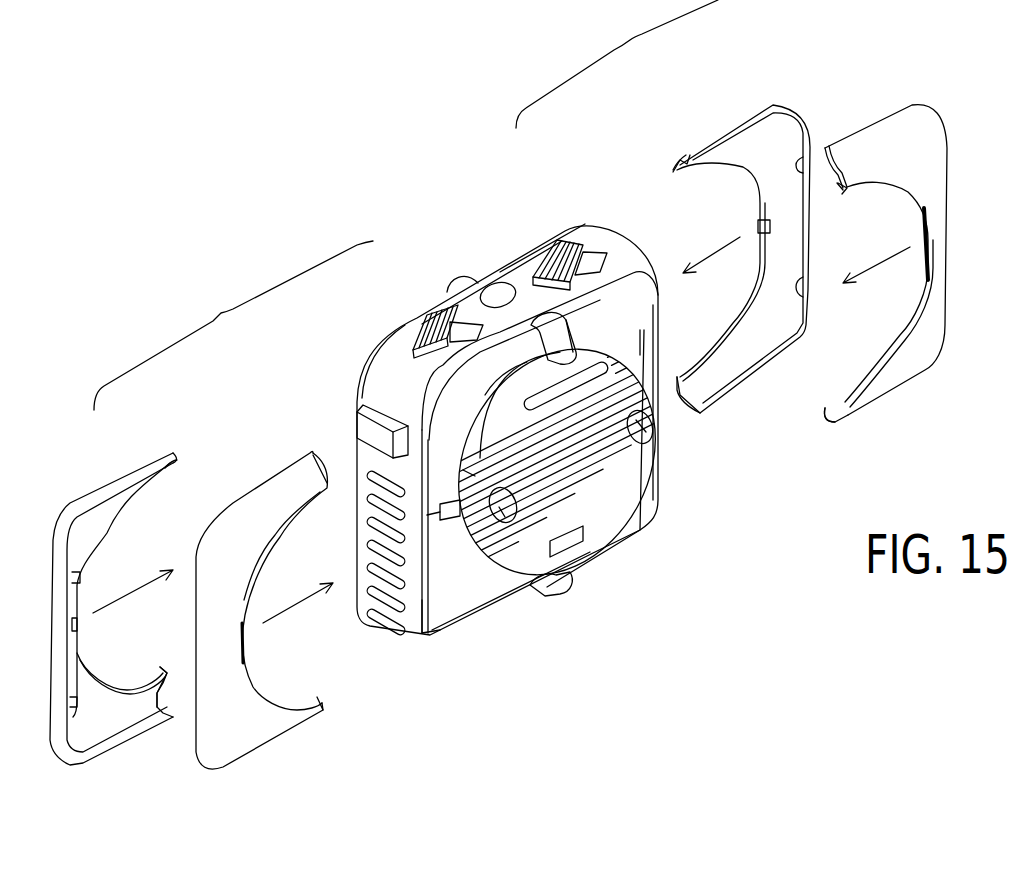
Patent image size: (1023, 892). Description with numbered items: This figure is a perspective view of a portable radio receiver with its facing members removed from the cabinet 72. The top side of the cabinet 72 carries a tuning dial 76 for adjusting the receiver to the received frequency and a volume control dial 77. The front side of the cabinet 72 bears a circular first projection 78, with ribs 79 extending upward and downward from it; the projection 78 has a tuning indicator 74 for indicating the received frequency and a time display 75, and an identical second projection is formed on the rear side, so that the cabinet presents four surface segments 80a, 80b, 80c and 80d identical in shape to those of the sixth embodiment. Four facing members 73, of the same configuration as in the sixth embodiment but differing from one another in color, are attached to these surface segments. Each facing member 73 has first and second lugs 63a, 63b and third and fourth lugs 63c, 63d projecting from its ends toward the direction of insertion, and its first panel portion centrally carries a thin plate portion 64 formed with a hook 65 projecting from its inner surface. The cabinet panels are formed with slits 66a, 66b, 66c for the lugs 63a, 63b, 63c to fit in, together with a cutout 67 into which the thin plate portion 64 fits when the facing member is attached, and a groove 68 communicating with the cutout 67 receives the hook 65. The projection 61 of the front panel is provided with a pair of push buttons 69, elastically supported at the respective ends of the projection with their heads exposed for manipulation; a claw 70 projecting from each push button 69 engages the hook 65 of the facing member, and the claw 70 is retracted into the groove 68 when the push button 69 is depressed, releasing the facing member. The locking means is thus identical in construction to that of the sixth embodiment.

The projection 61 is at (646, 432).
The first lug 63a is at (678, 169).
The second lug 63b is at (677, 392).
The third lug 63c is at (800, 170).
The fourth lug 63d is at (797, 293).
The thin plate portion 64 is at (920, 257).
The hook 65 is at (760, 227).
The first slit 66a is at (540, 354).
The second slit 66b is at (420, 452).
The third slit 66c is at (425, 627).
The cutout 67 is at (473, 473).
The groove 68 is at (443, 508).
The push button 69 is at (487, 560).
The claw 70 is at (450, 517).
The cabinet 72 is at (367, 357).
The facing member 73 is at (727, 127).
The tuning indicator 74 is at (637, 357).
The time display 75 is at (570, 543).
The tuning dial 76 is at (603, 233).
The volume control dial 77 is at (442, 313).
The circular first projection 78 is at (623, 508).
The rib 79 is at (560, 320).
The surface segment 80a is at (630, 520).
The surface segment 80b is at (500, 602).
The surface segment 80c is at (523, 260).
The surface segment 80d is at (380, 362).